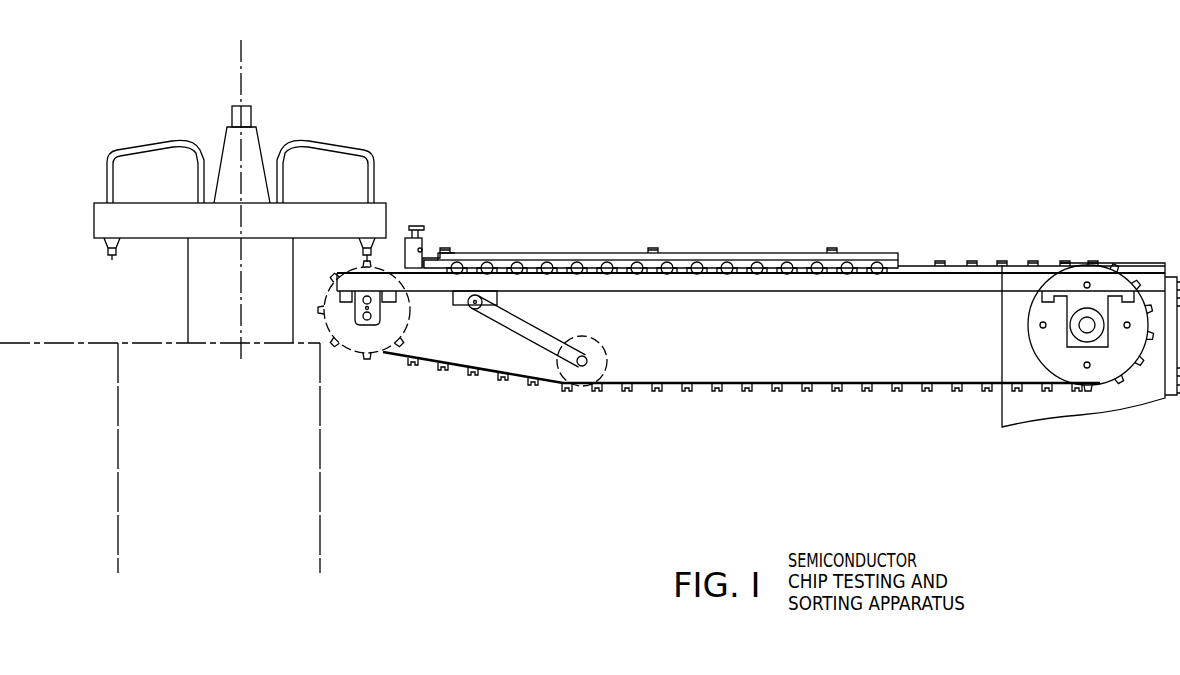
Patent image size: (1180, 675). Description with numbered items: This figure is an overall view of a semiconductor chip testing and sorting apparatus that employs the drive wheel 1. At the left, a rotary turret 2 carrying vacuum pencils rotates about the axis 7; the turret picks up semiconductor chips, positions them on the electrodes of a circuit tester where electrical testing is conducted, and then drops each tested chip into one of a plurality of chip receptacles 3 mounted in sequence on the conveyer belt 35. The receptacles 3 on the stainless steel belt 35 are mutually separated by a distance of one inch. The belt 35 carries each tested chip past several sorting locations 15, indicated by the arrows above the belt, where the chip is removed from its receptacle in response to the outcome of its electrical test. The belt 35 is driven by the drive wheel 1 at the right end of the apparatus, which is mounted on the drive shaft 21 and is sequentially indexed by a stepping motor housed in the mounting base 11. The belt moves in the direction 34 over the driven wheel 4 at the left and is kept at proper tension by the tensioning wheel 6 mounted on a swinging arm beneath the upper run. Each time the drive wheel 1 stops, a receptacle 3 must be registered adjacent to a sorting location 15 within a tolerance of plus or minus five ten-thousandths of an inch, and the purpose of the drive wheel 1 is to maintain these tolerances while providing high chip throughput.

The drive wheel 1 is at (1118, 374).
The rotary turret 2 is at (359, 124).
The chip receptacle 3 is at (370, 262).
The driven wheel 4 is at (380, 346).
The tensioning wheel 6 is at (583, 386).
The axis 7 is at (240, 55).
The mounting base 11 is at (1152, 406).
The sorting location 15 is at (517, 250).
The drive shaft 21 is at (1082, 325).
The direction 34 is at (1104, 248).
The conveyer belt 35 is at (1020, 264).